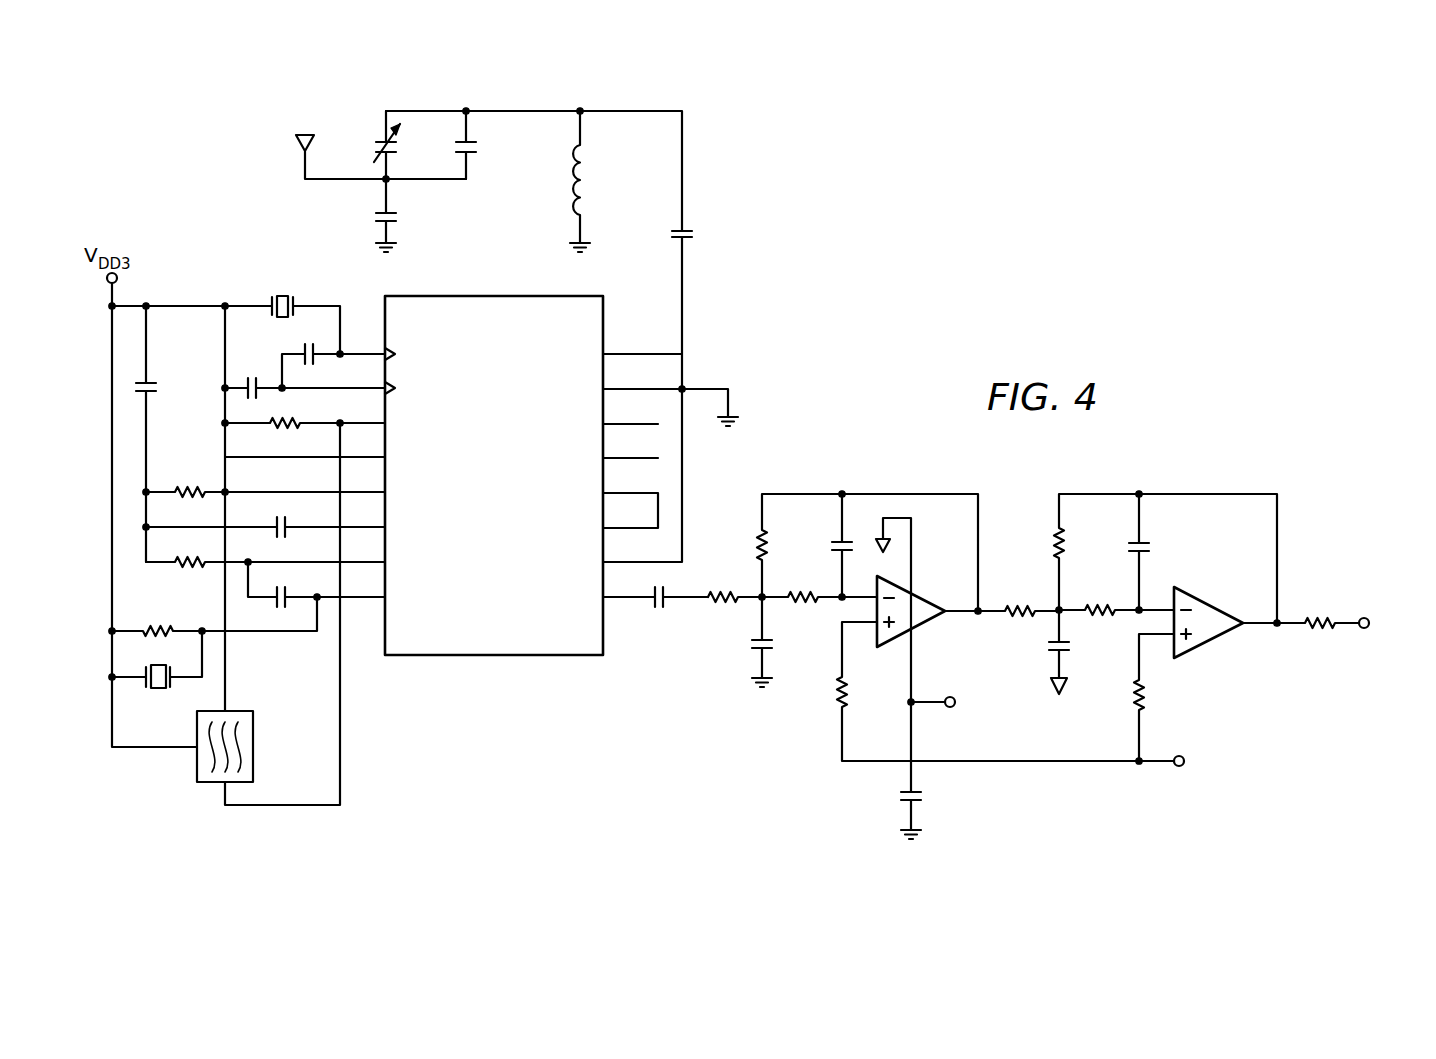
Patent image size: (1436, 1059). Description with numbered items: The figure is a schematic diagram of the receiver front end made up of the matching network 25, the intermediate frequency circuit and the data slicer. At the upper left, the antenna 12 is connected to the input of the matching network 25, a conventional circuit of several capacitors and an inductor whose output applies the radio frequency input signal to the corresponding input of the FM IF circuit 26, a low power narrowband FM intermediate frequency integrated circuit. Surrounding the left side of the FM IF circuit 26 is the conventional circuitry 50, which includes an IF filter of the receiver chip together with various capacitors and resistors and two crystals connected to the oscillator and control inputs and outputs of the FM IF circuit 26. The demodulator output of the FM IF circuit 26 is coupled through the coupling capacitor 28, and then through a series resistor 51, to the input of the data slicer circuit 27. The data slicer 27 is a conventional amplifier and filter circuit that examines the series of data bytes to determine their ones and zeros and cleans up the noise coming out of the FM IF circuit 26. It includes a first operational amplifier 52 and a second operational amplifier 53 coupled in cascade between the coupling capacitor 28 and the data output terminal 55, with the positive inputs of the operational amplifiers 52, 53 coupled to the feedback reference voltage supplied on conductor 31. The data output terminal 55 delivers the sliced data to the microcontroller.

The antenna 12 is at (300, 134).
The matching network 25 is at (599, 171).
The FM IF circuit 26 is at (494, 657).
The data slicer circuit 27 is at (817, 714).
The coupling capacitor 28 is at (656, 613).
The feedback reference signal conductor 31 is at (1182, 768).
The IF filter circuitry 50 is at (197, 799).
The resistor 51 is at (720, 605).
The operational amplifier 52 is at (931, 626).
The operational amplifier 53 is at (1212, 645).
The data output terminal 55 is at (1367, 631).